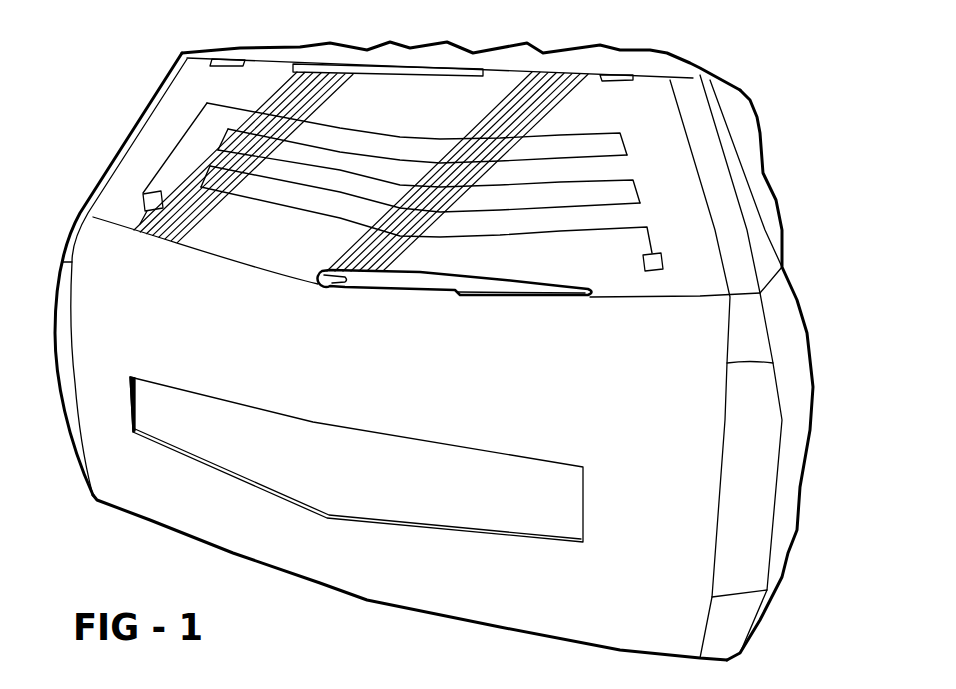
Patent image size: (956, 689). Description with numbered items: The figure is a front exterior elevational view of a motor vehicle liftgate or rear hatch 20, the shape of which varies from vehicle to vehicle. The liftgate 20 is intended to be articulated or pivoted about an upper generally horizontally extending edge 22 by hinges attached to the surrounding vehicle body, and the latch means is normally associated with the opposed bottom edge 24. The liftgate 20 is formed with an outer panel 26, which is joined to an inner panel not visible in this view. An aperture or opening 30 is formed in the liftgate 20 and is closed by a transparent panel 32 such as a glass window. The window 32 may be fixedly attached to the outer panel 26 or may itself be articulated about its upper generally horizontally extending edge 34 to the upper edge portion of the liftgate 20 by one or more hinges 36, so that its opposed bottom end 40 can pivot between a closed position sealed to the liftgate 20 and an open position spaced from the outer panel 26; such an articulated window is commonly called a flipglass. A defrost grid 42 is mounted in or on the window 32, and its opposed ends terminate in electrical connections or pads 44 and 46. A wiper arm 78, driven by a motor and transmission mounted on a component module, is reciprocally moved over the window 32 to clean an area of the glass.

The liftgate 20 is at (768, 189).
The upper edge 22 is at (683, 68).
The bottom edge 24 is at (370, 600).
The outer panel 26 is at (788, 338).
The aperture 30 is at (712, 205).
The transparent panel 32 is at (670, 140).
The upper edge of window 34 is at (392, 65).
The hinges 36 is at (228, 66).
The bottom end of window 40 is at (240, 258).
The defrost grid 42 is at (172, 156).
The electrical connection pad 44 is at (143, 200).
The electrical connection pad 46 is at (650, 271).
The wiper arm 78 is at (420, 283).